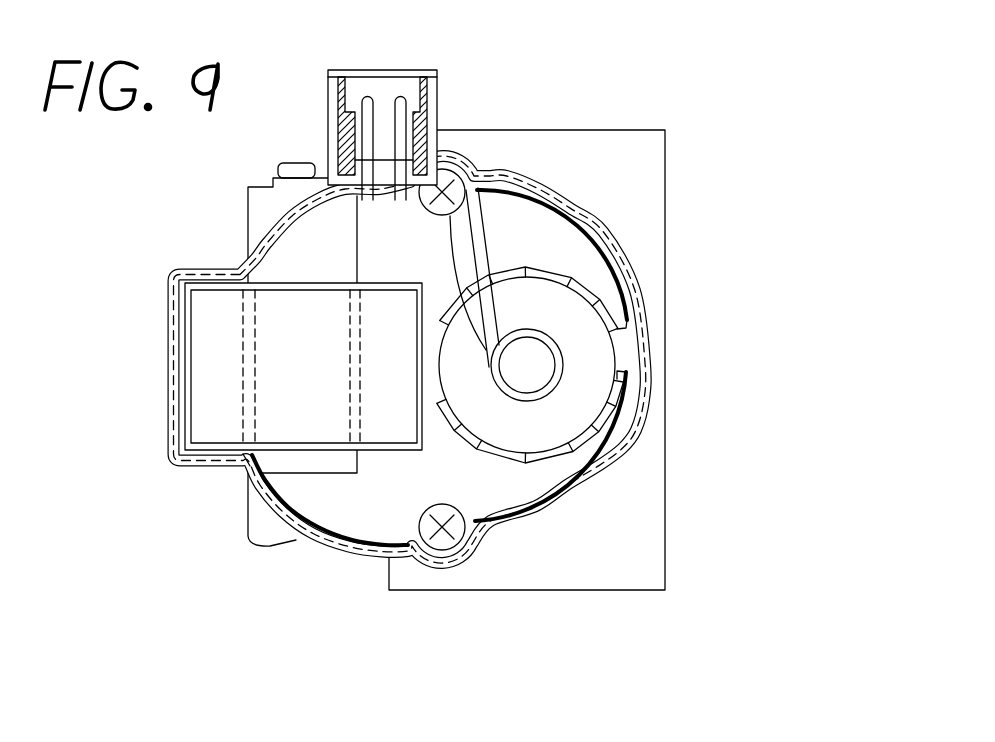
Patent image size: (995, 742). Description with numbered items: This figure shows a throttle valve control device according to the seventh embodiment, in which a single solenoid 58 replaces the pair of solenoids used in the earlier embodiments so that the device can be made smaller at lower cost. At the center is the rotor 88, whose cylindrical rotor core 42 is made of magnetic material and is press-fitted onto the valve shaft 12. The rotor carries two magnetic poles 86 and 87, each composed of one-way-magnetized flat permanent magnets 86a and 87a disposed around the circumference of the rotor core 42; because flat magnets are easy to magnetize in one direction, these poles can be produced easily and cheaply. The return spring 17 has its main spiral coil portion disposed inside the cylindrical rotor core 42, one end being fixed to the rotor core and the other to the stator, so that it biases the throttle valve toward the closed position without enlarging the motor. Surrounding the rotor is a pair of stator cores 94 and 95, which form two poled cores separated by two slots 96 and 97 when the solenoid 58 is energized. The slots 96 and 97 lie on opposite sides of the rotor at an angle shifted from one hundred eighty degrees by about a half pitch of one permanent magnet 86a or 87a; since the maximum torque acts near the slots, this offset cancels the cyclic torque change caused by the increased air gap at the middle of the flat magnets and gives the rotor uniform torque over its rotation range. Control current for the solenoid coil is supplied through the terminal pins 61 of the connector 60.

The valve shaft 12 is at (536, 364).
The return spring 17 is at (505, 262).
The rotor core 42 is at (577, 388).
The solenoid 58 is at (248, 456).
The connector 60 is at (440, 97).
The terminal pins 61 is at (367, 97).
The magnetic pole 86 is at (562, 477).
The flat permanent magnets 86a is at (590, 430).
The magnetic pole 87 is at (603, 213).
The flat permanent magnets 87a is at (465, 176).
The rotor 88 is at (630, 331).
The stator core 94 is at (328, 233).
The stator core 95 is at (307, 500).
The slot 96 is at (423, 360).
The slot 97 is at (614, 363).